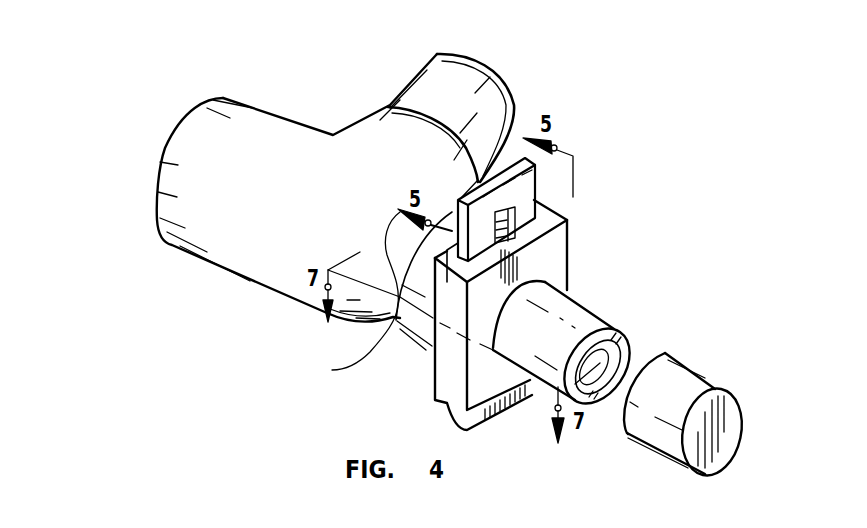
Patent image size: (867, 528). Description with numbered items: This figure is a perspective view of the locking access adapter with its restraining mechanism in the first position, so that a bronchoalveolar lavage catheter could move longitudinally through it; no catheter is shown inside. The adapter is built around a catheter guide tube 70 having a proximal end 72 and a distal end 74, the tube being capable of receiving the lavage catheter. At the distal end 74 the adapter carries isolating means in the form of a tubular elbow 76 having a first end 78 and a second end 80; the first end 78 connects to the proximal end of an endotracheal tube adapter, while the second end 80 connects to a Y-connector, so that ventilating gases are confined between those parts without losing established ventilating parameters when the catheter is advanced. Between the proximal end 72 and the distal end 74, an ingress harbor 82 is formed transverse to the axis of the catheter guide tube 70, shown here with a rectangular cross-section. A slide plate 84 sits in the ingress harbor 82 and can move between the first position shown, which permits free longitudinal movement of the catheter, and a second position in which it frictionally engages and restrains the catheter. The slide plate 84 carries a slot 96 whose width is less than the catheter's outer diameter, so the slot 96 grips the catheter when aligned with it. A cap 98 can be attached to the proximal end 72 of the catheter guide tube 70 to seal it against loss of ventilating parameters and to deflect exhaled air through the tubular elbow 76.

The catheter guide tube 70 is at (430, 338).
The proximal end 72 is at (590, 325).
The distal end 74 is at (334, 370).
The tubular elbow 76 is at (223, 240).
The first end 78 is at (178, 163).
The second end 80 is at (478, 100).
The ingress harbor 82 is at (520, 240).
The slide plate 84 is at (523, 192).
The slot 96 is at (513, 212).
The cap 98 is at (703, 372).